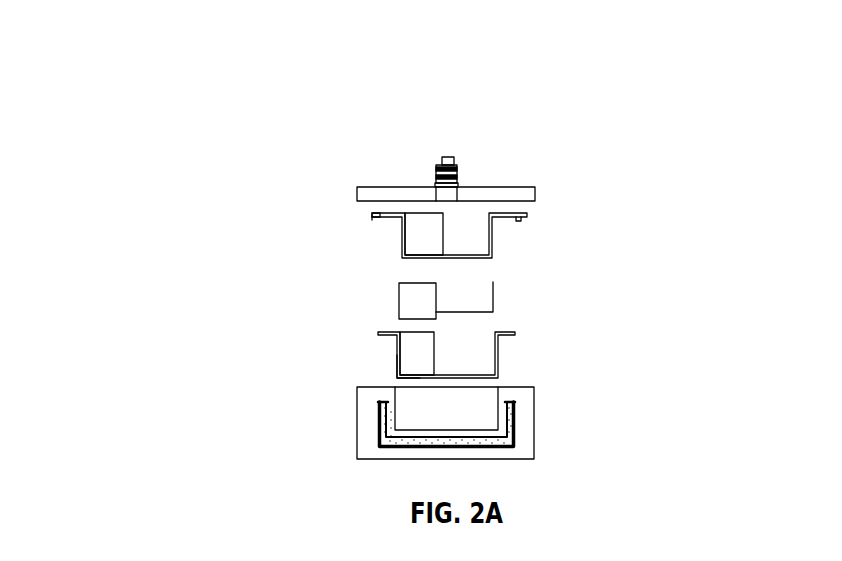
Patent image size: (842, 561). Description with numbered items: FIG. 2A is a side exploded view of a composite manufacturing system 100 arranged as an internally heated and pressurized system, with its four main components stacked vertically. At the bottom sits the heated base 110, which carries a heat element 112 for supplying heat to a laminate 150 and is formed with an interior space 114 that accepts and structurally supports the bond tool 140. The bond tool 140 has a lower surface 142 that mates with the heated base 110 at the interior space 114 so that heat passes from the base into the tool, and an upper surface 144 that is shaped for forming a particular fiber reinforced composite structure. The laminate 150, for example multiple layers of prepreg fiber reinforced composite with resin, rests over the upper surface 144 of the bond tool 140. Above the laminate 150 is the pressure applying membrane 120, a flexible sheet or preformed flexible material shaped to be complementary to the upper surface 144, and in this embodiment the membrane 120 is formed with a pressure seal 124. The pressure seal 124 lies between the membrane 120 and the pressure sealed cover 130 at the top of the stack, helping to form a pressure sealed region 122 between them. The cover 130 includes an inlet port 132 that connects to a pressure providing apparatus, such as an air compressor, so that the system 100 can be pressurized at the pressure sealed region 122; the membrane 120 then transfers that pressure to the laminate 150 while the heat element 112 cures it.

The composite manufacturing system 100 is at (124, 62).
The heated base 110 is at (366, 403).
The heat element 112 is at (507, 447).
The interior space 114 is at (470, 395).
The pressure applying membrane 120 is at (371, 214).
The pressure sealed region 122 is at (472, 236).
The pressure seal 124 is at (373, 219).
The pressure sealed cover 130 is at (518, 194).
The inlet port 132 is at (443, 159).
The bond tool 140 is at (378, 333).
The lower surface 142 is at (369, 368).
The upper surface 144 is at (456, 352).
The laminate 150 is at (399, 290).